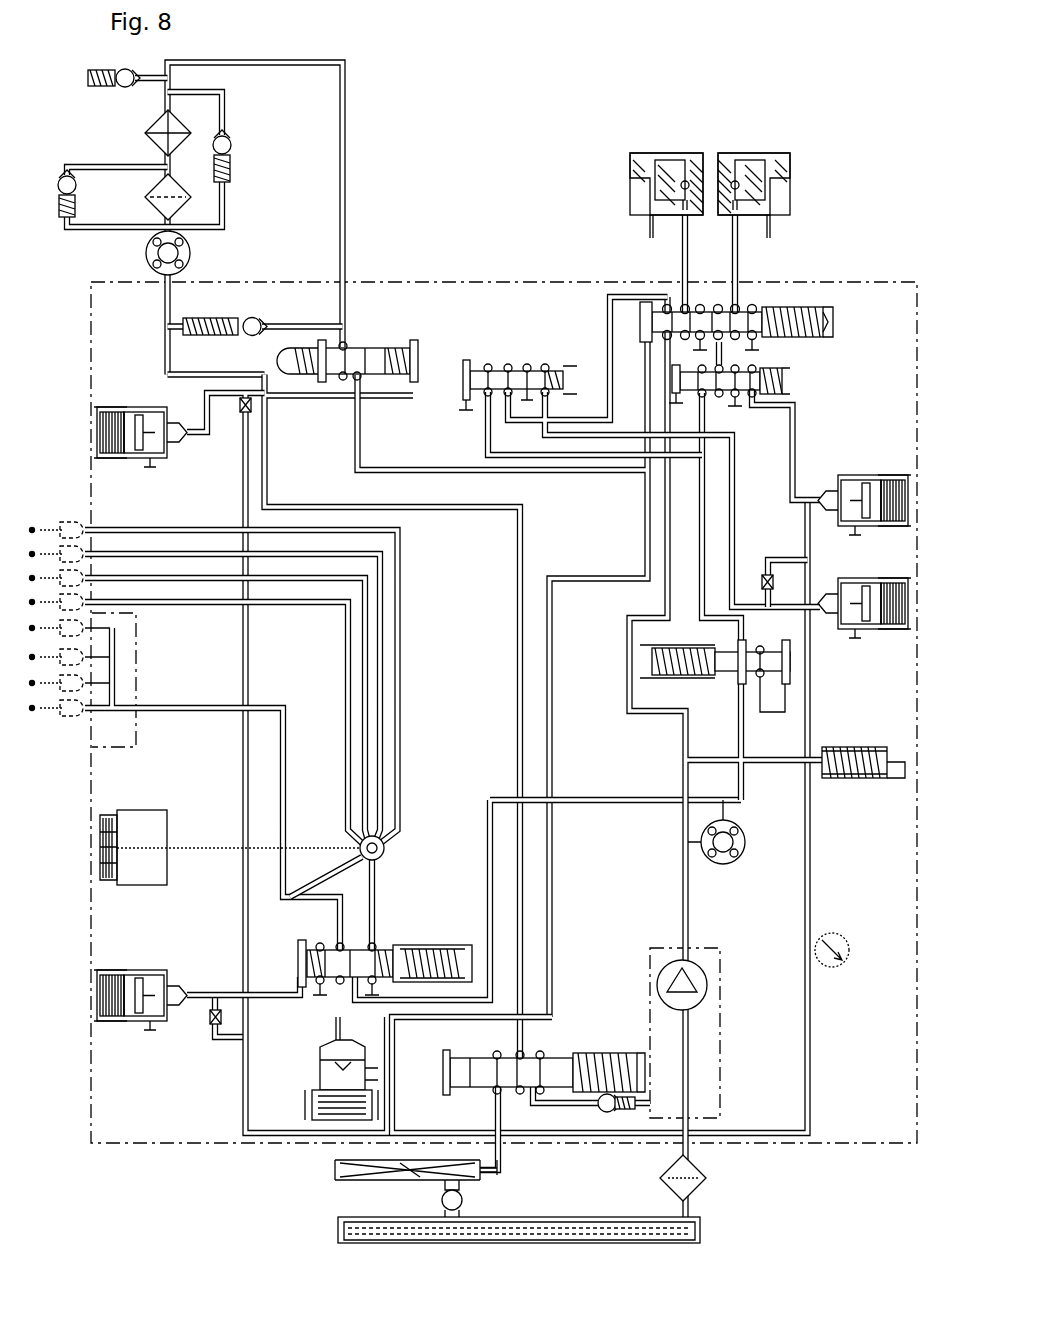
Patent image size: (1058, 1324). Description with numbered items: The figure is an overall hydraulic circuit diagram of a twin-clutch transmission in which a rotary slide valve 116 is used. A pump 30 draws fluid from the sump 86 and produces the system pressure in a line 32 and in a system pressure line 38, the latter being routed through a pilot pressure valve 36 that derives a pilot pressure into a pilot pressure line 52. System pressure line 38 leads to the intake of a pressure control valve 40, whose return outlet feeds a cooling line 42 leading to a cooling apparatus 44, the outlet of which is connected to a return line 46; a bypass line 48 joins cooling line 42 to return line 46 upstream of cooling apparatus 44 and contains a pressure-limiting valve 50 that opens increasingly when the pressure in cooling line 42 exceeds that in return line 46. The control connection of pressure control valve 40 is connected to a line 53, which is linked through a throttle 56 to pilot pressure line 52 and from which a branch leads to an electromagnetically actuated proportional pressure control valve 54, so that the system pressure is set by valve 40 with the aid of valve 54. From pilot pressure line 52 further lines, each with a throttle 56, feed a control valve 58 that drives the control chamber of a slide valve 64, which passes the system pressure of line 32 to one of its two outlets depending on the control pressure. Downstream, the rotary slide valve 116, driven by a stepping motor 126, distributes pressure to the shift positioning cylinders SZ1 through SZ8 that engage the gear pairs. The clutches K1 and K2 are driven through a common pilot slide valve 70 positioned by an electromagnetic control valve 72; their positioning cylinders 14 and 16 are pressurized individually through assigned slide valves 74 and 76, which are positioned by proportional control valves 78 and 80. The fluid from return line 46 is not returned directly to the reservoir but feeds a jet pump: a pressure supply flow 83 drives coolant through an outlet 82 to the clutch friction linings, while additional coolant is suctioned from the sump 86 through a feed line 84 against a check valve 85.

The positioning cylinder 14 is at (680, 145).
The positioning cylinder 16 is at (735, 145).
The pump 30 is at (707, 985).
The line 32 is at (488, 888).
The pilot pressure valve 36 is at (652, 661).
The system pressure line 38 is at (361, 434).
The pressure control valve 40 is at (388, 345).
The cooling line 42 is at (346, 160).
The cooling apparatus 44 is at (158, 144).
The return line 46 is at (167, 357).
The bypass line 48 is at (288, 326).
The pressure-limiting valve 50 is at (220, 318).
The pilot pressure line 52 is at (807, 878).
The line 53 is at (308, 398).
The pressure control valve 54 is at (97, 433).
The throttle 56 is at (243, 500).
The control valve 58 is at (97, 993).
The slide valve 64 is at (430, 945).
The pilot slide valve 70 is at (833, 322).
The electromagnetic control valve 72 is at (333, 1120).
The slide valve 74 is at (520, 368).
The slide valve 76 is at (790, 381).
The control valve 78 is at (876, 475).
The control valve 80 is at (876, 633).
The outlet 82 is at (338, 1178).
The pressure supply flow 83 is at (392, 1184).
The feed line 84 is at (503, 1171).
The check valve 85 is at (466, 1202).
The sump 86 is at (580, 1212).
The rotary slide valve 116 is at (396, 851).
The stepping motor 126 is at (100, 848).
The clutch K1 is at (630, 181).
The clutch K2 is at (790, 176).
The positioning cylinder SZ1 is at (36, 738).
The positioning cylinder SZ8 is at (62, 603).